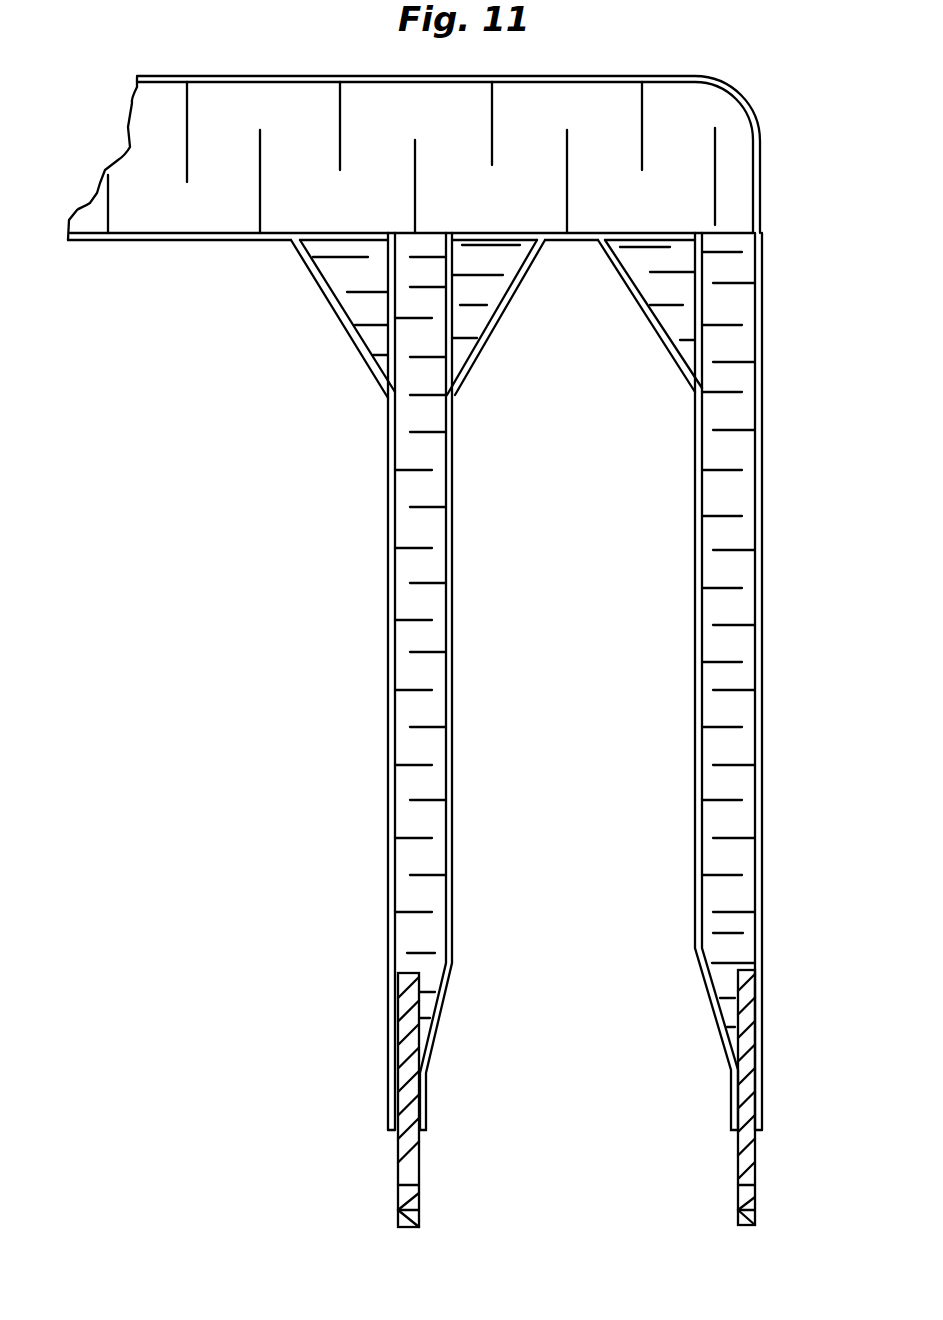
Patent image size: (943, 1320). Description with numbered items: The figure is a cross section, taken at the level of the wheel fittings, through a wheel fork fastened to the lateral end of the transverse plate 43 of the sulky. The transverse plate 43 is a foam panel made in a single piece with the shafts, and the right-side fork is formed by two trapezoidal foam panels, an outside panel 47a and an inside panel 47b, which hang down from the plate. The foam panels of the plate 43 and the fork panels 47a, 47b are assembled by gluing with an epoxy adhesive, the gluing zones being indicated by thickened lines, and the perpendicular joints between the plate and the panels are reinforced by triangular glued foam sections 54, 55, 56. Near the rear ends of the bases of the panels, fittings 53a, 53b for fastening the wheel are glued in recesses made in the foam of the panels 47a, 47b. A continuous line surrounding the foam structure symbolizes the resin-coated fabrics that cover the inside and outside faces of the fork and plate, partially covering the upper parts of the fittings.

The transverse plate 43 is at (703, 161).
The triangular glued foam section 54 is at (345, 275).
The triangular glued foam section 55 is at (478, 318).
The triangular glued foam section 56 is at (675, 320).
The inside panel 47b is at (410, 568).
The outside panel 47a is at (740, 612).
The fitting 53b is at (408, 1160).
The fitting 53a is at (750, 1164).